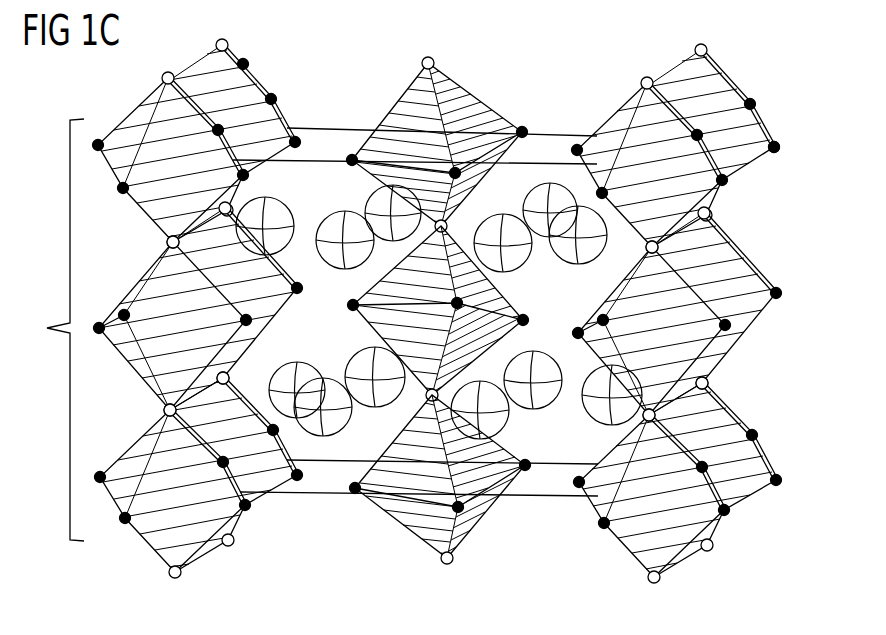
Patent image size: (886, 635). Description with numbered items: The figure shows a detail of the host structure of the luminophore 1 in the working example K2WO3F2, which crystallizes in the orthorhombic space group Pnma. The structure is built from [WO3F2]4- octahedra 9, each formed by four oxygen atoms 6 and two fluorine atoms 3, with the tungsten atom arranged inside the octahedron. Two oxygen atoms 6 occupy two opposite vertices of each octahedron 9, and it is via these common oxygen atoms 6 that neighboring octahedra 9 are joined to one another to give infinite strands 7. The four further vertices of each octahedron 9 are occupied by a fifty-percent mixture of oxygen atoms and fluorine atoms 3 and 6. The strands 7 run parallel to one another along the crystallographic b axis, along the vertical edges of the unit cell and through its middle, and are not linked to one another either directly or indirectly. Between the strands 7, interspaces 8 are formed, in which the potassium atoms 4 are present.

The luminophore 1 is at (766, 48).
The F atom 3 is at (781, 145).
The K atom 4 is at (545, 377).
The O atom 6 is at (431, 58).
The strand 7 is at (55, 330).
The interspace 8 is at (597, 268).
The [WO3F2]4- octahedron 9 is at (244, 58).